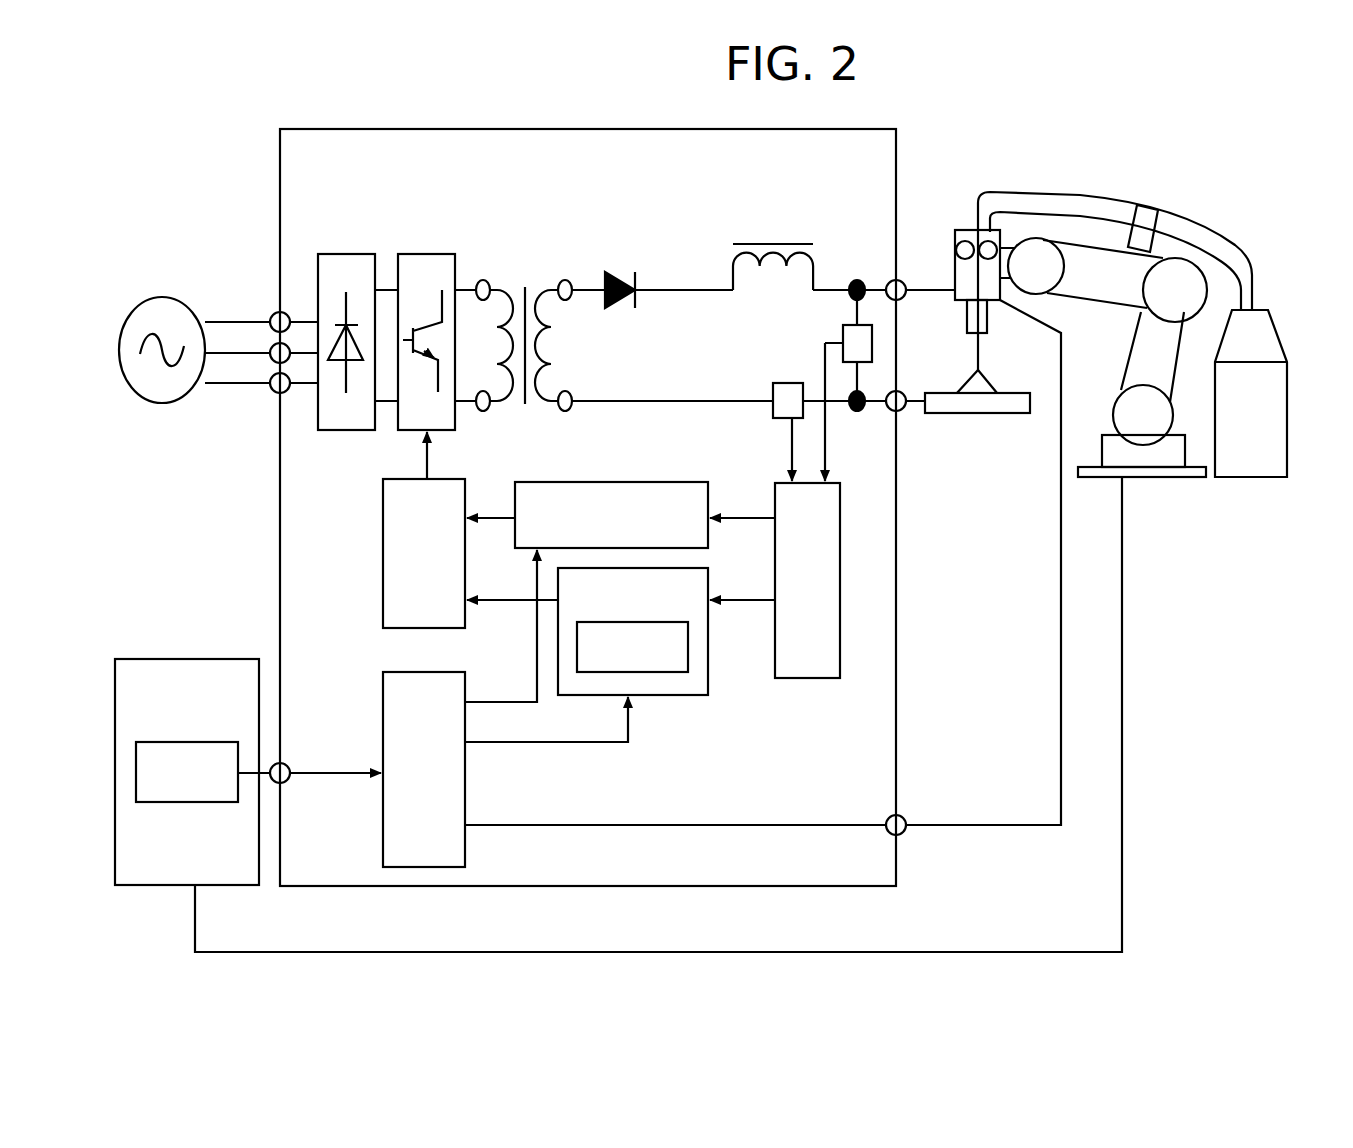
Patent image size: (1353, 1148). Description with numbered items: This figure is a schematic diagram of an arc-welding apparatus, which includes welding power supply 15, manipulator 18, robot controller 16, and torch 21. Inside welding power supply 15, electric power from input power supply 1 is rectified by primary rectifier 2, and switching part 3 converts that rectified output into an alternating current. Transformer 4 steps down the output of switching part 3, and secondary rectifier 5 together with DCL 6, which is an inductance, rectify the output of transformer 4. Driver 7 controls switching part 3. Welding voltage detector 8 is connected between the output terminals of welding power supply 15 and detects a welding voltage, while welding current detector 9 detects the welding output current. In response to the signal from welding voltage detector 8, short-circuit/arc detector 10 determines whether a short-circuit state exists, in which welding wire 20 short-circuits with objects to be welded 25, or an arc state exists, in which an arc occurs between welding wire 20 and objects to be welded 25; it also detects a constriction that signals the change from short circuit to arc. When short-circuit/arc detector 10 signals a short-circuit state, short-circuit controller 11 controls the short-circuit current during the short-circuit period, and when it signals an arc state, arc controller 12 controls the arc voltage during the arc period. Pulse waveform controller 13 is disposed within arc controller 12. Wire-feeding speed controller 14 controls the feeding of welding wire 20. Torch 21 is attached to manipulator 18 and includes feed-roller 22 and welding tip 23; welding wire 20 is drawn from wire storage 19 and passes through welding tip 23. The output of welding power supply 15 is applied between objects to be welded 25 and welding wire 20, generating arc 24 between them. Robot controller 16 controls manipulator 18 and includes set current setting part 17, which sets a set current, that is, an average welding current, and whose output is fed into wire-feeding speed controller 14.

The input power supply 1 is at (162, 330).
The primary rectifier 2 is at (345, 325).
The switching part 3 is at (426, 325).
The transformer 4 is at (524, 327).
The secondary rectifier 5 is at (620, 270).
The DCL 6 is at (773, 246).
The driver 7 is at (424, 553).
The welding voltage detector 8 is at (859, 345).
The welding current detector 9 is at (788, 384).
The short-circuit/arc detector 10 is at (807, 580).
The short-circuit controller 11 is at (611, 515).
The arc controller 12 is at (633, 631).
The pulse waveform controller 13 is at (632, 647).
The wire-feeding speed controller 14 is at (424, 769).
The welding power supply 15 is at (588, 489).
The robot controller 16 is at (187, 755).
The set current setting part 17 is at (187, 772).
The manipulator 18 is at (1145, 415).
The wire storage 19 is at (1257, 448).
The welding wire 20 is at (1020, 190).
The torch 21 is at (965, 273).
The feed-roller 22 is at (965, 250).
The welding tip 23 is at (967, 327).
The arc 24 is at (965, 382).
The objects to be welded 25 is at (978, 407).